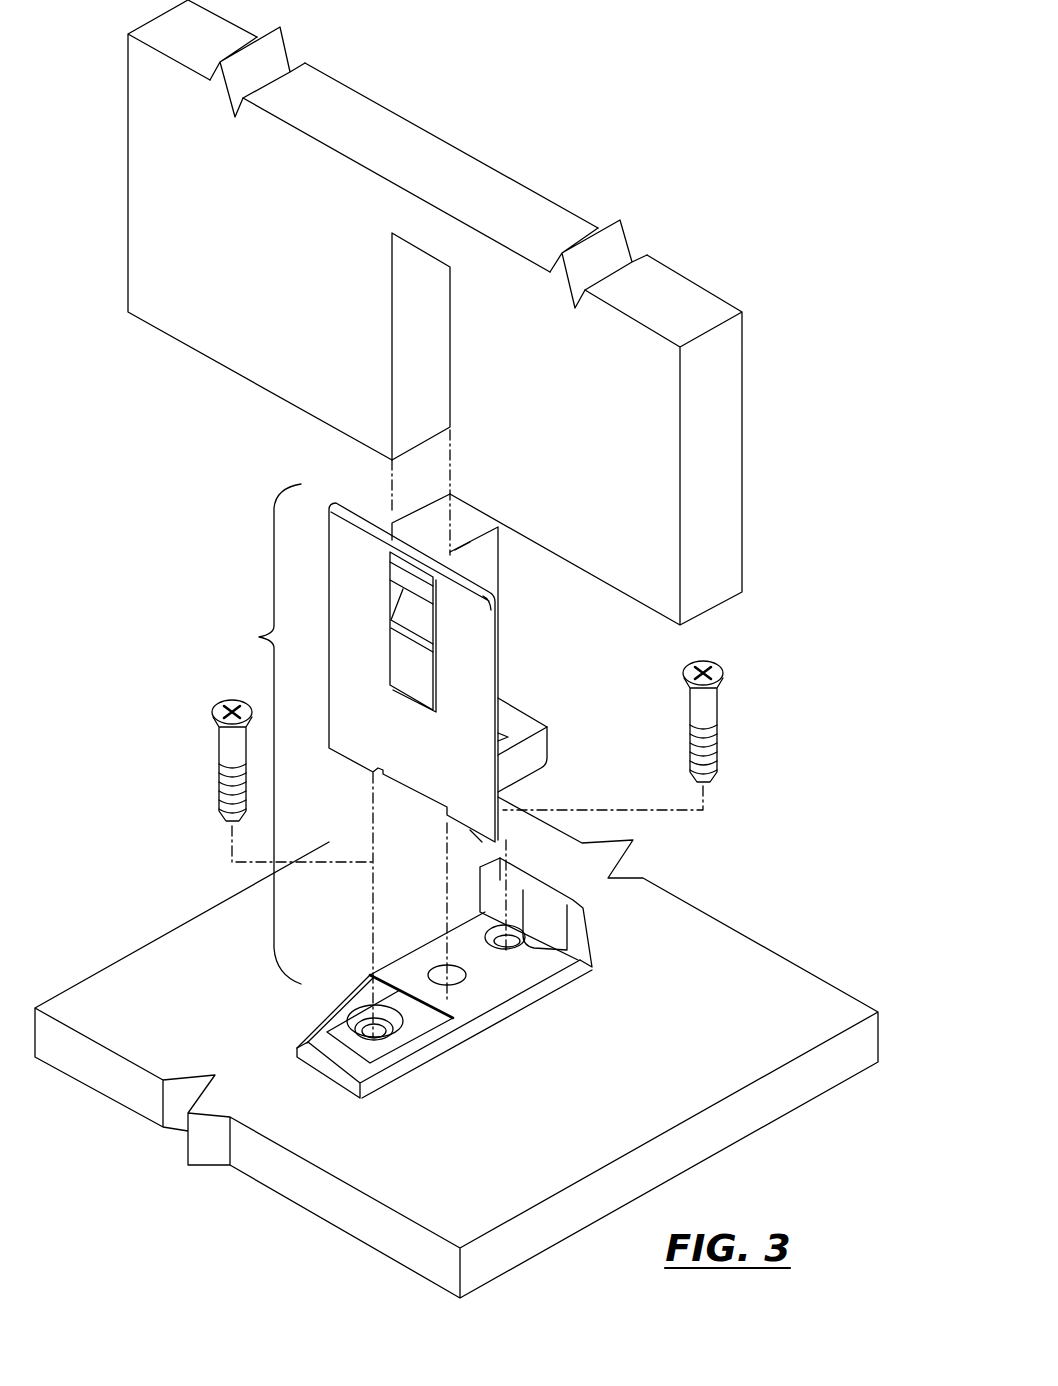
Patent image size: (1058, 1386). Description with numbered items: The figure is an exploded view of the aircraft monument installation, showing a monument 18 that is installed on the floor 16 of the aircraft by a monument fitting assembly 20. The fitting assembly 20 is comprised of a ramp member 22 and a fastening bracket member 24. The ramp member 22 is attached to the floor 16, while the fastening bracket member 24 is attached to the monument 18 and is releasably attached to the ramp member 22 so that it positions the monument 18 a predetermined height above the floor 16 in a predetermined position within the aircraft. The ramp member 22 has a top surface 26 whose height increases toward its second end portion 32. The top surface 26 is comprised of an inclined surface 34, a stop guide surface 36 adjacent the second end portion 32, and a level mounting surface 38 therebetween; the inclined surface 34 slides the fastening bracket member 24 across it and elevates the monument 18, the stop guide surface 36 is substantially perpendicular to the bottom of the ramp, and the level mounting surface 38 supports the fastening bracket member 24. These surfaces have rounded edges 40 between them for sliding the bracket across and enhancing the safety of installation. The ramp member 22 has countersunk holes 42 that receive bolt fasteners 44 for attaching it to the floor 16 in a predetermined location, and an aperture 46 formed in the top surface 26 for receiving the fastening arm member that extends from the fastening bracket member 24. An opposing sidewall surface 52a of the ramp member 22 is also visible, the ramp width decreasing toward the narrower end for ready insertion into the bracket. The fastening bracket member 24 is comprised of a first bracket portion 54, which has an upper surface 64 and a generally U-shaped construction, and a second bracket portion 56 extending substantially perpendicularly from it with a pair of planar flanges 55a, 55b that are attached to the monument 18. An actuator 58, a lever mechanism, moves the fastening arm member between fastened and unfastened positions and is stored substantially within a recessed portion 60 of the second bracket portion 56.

The floor 16 is at (198, 930).
The monument 18 is at (690, 281).
The monument fitting assembly 20 is at (260, 734).
The ramp member 22 is at (480, 862).
The fastening bracket member 24 is at (418, 646).
The top surface 26 is at (456, 961).
The second end portion 32 is at (524, 882).
The inclined surface 34 is at (403, 1037).
The stop guide surface 36 is at (495, 890).
The level mounting surface 38 is at (410, 985).
The rounded edges 40 is at (523, 915).
The countersunk holes 42 is at (433, 958).
The bolt fasteners 44 is at (720, 710).
The aperture 46 is at (425, 965).
The sidewall surface 52a is at (513, 1003).
The first bracket portion 54 is at (520, 767).
The planar flange 55a is at (378, 510).
The planar flange 55b is at (500, 577).
The second bracket portion 56 is at (497, 569).
The actuator 58 is at (426, 678).
The recessed portion 60 is at (393, 608).
The upper surface 64 is at (522, 716).